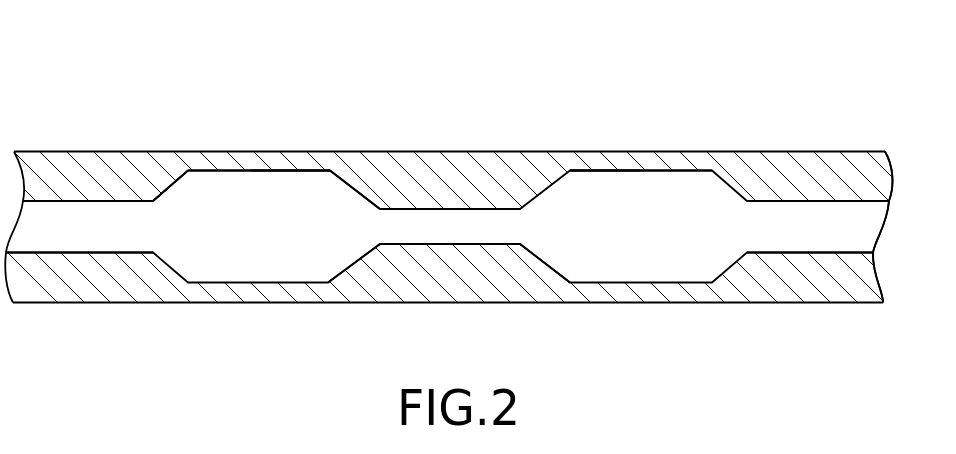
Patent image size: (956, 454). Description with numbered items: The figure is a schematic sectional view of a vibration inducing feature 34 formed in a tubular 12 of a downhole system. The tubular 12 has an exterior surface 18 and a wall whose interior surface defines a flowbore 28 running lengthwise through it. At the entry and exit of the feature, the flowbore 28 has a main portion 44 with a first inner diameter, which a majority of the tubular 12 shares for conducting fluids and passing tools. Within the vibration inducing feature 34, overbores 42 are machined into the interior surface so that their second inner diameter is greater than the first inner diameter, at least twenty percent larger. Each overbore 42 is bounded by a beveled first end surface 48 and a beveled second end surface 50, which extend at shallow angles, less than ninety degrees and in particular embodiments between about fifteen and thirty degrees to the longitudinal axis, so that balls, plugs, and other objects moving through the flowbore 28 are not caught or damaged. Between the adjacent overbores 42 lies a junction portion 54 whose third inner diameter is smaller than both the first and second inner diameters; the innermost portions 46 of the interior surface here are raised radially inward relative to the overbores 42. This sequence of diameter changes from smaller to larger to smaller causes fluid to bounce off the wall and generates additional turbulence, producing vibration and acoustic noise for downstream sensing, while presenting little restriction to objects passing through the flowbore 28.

The tubular 12 is at (97, 152).
The exterior surface 18 is at (799, 152).
The first end surface 48 is at (169, 188).
The vibration inducing feature 34 is at (224, 152).
The overbores 42 is at (278, 152).
The second end surface 50 is at (350, 183).
The innermost portions 46 is at (449, 209).
The flowbore 28 is at (682, 187).
The main portion 44 is at (79, 252).
The junction portion 54 is at (473, 226).